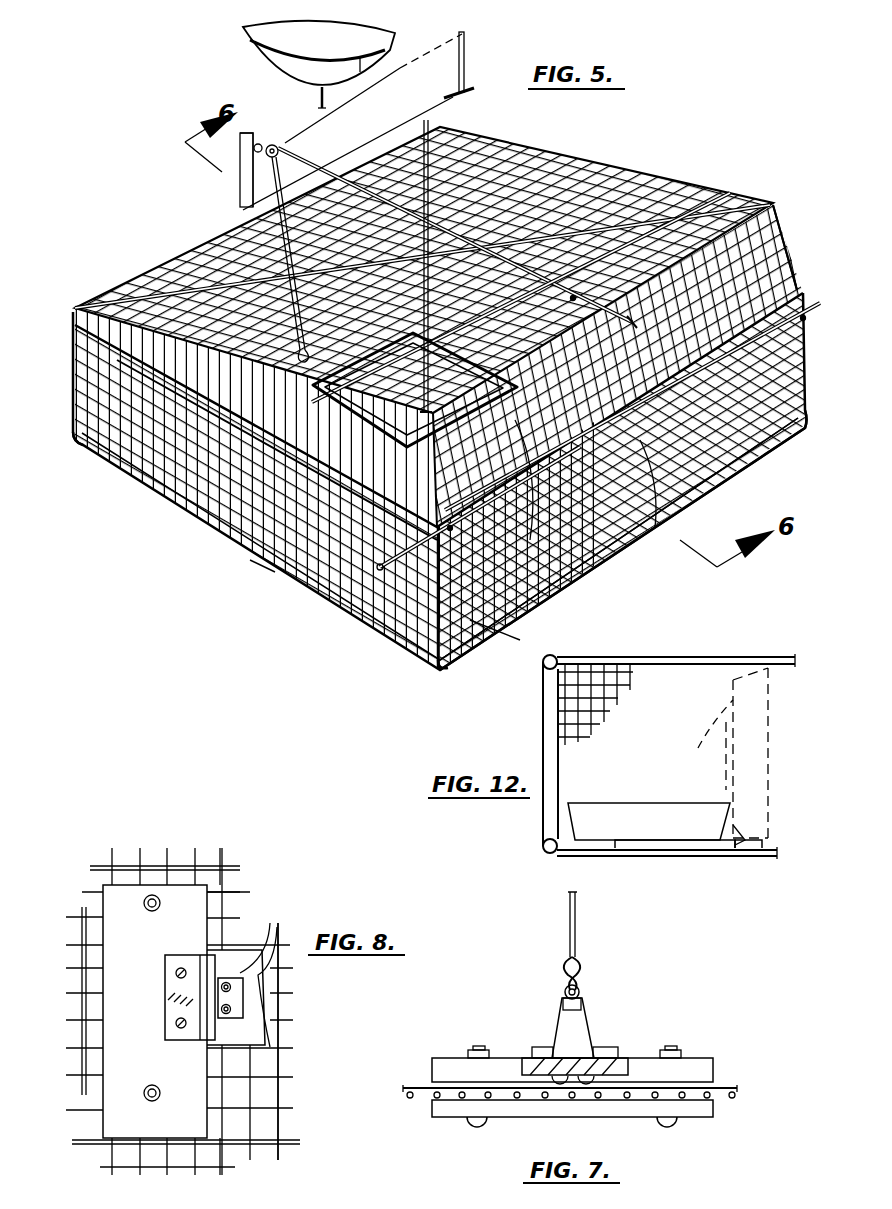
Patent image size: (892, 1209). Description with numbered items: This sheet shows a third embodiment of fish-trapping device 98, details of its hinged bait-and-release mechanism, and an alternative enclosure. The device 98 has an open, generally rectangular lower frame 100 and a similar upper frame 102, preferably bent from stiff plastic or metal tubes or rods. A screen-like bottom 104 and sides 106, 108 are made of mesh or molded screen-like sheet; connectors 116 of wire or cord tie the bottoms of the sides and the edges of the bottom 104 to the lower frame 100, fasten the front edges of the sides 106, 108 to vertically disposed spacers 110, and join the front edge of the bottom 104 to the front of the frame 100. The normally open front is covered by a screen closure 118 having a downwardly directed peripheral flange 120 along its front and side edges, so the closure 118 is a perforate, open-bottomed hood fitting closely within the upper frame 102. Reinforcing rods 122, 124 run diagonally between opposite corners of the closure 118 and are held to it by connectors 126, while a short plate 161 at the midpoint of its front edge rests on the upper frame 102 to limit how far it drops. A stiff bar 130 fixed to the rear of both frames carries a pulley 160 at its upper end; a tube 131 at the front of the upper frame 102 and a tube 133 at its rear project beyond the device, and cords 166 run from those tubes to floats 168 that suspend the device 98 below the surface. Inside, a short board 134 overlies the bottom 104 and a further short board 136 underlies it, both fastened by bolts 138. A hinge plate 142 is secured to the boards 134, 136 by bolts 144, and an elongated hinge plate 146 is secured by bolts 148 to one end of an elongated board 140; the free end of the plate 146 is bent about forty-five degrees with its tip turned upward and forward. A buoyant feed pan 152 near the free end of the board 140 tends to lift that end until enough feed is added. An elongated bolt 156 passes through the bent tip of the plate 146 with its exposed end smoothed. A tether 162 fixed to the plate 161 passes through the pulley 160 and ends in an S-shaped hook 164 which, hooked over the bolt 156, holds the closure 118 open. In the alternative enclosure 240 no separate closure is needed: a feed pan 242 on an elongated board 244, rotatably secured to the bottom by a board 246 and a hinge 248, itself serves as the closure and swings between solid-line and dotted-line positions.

In FIG. 5, the fish-trapping device 98 is at (212, 558).
In FIG. 5, the lower frame 100 is at (118, 462).
In FIG. 5, the upper frame 102 is at (800, 298).
In FIG. 5, the bottom 104 is at (606, 560).
In FIG. 8, the bottom 104 is at (282, 1068).
In FIG. 7, the bottom 104 is at (410, 1093).
In FIG. 5, the side 106 is at (266, 568).
In FIG. 5, the side 108 is at (776, 470).
In FIG. 5, the spacers 110 is at (68, 428).
In FIG. 5, the connectors 116 is at (240, 557).
In FIG. 5, the closure 118 is at (630, 165).
In FIG. 5, the peripheral flange 120 is at (780, 252).
In FIG. 5, the reinforcing rod 122 is at (455, 138).
In FIG. 5, the reinforcing rod 124 is at (690, 213).
In FIG. 5, the connectors 126 is at (392, 138).
In FIG. 5, the stiff bar 130 is at (243, 180).
In FIG. 5, the tube 131 is at (336, 616).
In FIG. 5, the tube 133 is at (452, 96).
In FIG. 8, the short board 134 is at (208, 905).
In FIG. 7, the short board 134 is at (440, 1063).
In FIG. 8, the short board 136 is at (203, 865).
In FIG. 7, the short board 136 is at (512, 1108).
In FIG. 8, the bolts 138 is at (153, 895).
In FIG. 7, the bolts 138 is at (478, 1048).
In FIG. 8, the elongated board 140 is at (258, 1012).
In FIG. 7, the elongated board 140 is at (618, 1060).
In FIG. 8, the hinge plate 142 is at (178, 1040).
In FIG. 8, the bolts 144 is at (180, 979).
In FIG. 8, the elongated hinge plate 146 is at (255, 990).
In FIG. 7, the elongated hinge plate 146 is at (584, 1018).
In FIG. 8, the bolts 148 is at (245, 960).
In FIG. 5, the feed pan 152 is at (490, 640).
In FIG. 7, the elongated bolt 156 is at (583, 983).
In FIG. 5, the pulley 160 is at (284, 150).
In FIG. 5, the short plate 161 is at (655, 530).
In FIG. 7, the tether 162 is at (577, 910).
In FIG. 7, the S-shaped hook 164 is at (562, 957).
In FIG. 5, the cords 166 is at (466, 48).
In FIG. 5, the floats 168 is at (248, 50).
In FIG. 12, the enclosure 240 is at (752, 652).
In FIG. 12, the feed pan 242 is at (652, 803).
In FIG. 12, the elongated board 244 is at (680, 850).
In FIG. 12, the board 246 is at (748, 850).
In FIG. 12, the hinge 248 is at (752, 835).